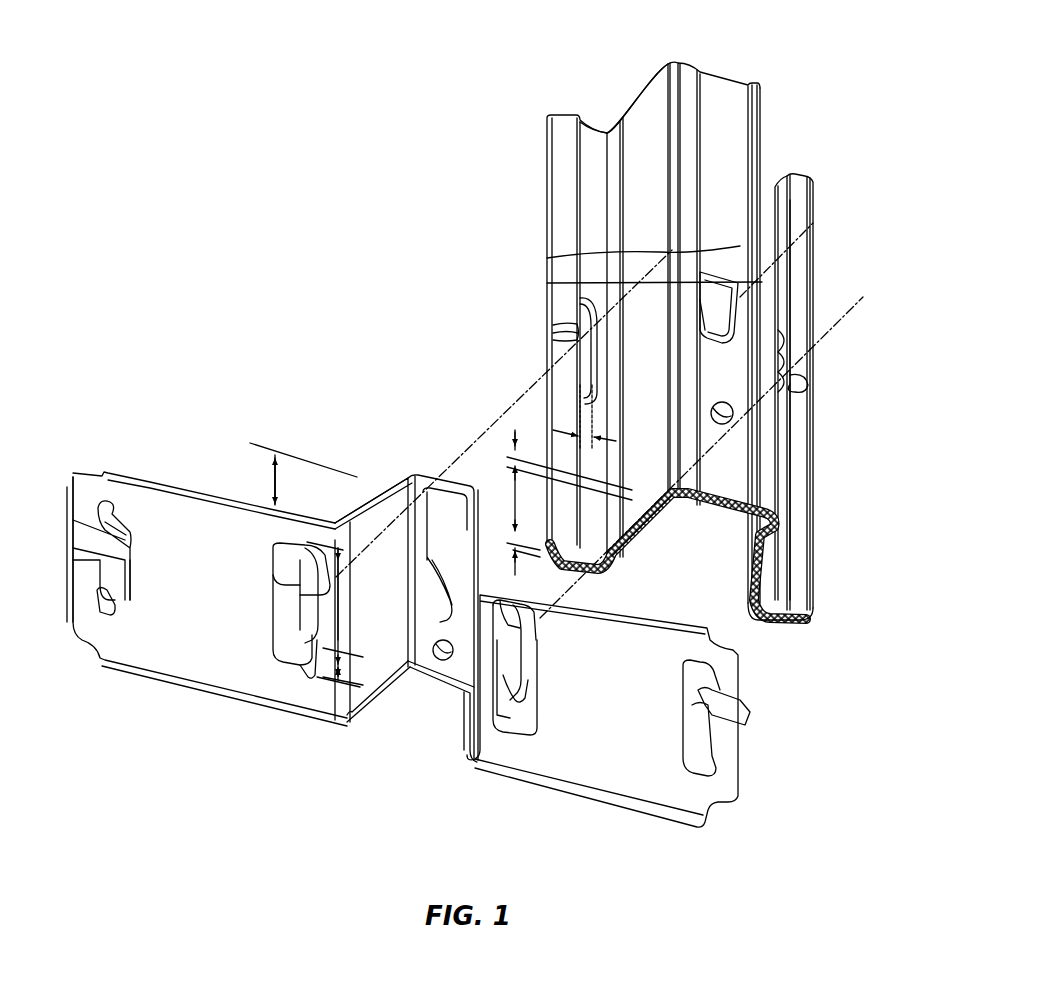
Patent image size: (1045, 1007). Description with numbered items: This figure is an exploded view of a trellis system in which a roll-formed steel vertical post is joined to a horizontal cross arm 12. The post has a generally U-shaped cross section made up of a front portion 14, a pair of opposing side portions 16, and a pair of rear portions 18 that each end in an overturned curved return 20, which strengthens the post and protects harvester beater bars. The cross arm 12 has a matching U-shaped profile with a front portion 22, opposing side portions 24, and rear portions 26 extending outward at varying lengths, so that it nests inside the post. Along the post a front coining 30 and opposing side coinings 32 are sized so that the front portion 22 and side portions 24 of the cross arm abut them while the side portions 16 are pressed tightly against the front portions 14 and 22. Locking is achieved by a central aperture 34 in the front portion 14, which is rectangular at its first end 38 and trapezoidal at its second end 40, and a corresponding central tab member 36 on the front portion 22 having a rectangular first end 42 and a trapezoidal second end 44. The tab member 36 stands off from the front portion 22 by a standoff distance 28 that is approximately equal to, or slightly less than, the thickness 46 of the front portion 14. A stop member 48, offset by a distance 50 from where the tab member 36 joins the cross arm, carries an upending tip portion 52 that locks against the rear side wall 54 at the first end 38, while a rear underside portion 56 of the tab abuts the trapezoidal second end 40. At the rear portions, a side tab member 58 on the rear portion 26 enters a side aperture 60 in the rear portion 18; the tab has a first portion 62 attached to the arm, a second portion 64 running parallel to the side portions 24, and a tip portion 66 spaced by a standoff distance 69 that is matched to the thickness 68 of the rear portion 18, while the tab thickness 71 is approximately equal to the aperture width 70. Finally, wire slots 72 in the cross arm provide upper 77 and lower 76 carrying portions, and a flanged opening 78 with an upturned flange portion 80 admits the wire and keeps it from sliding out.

The horizontal cross arm 12 is at (630, 782).
The front portion 14 is at (712, 72).
The opposing side portions 16 is at (628, 114).
The rear portions 18 is at (775, 615).
The returns 20 is at (808, 572).
The front portion 22 is at (435, 700).
The opposing side portions 24 is at (385, 715).
The rear portions 26 is at (213, 530).
The standoff distance 28 is at (420, 617).
The front coining 30 is at (718, 515).
The opposing side coinings 32 is at (630, 518).
The central aperture 34 is at (740, 288).
The central tab member 36 is at (490, 555).
The first end 38 is at (547, 258).
The second end 40 is at (547, 283).
The first end 42 is at (440, 540).
The second end 44 is at (522, 575).
The thickness 46 is at (515, 448).
The stop member 48 is at (430, 485).
The distance 50 is at (270, 483).
The upending tip portion 52 is at (447, 500).
The rear side wall 54 is at (737, 277).
The rear underside portion 56 is at (428, 565).
The side tab member 58 is at (300, 595).
The side aperture 60 is at (553, 345).
The first portion 62 is at (300, 563).
The second portion 64 is at (305, 630).
The tip portion 66 is at (310, 640).
The thickness 68 is at (522, 520).
The standoff distance 69 is at (330, 660).
The width 70 is at (583, 437).
The thickness 71 is at (338, 545).
The wire slots 72 is at (115, 568).
The lower carrying portion 76 is at (110, 620).
The upper carrying portion 77 is at (112, 505).
The flanged opening 78 is at (63, 538).
The upturned flange portion 80 is at (118, 515).